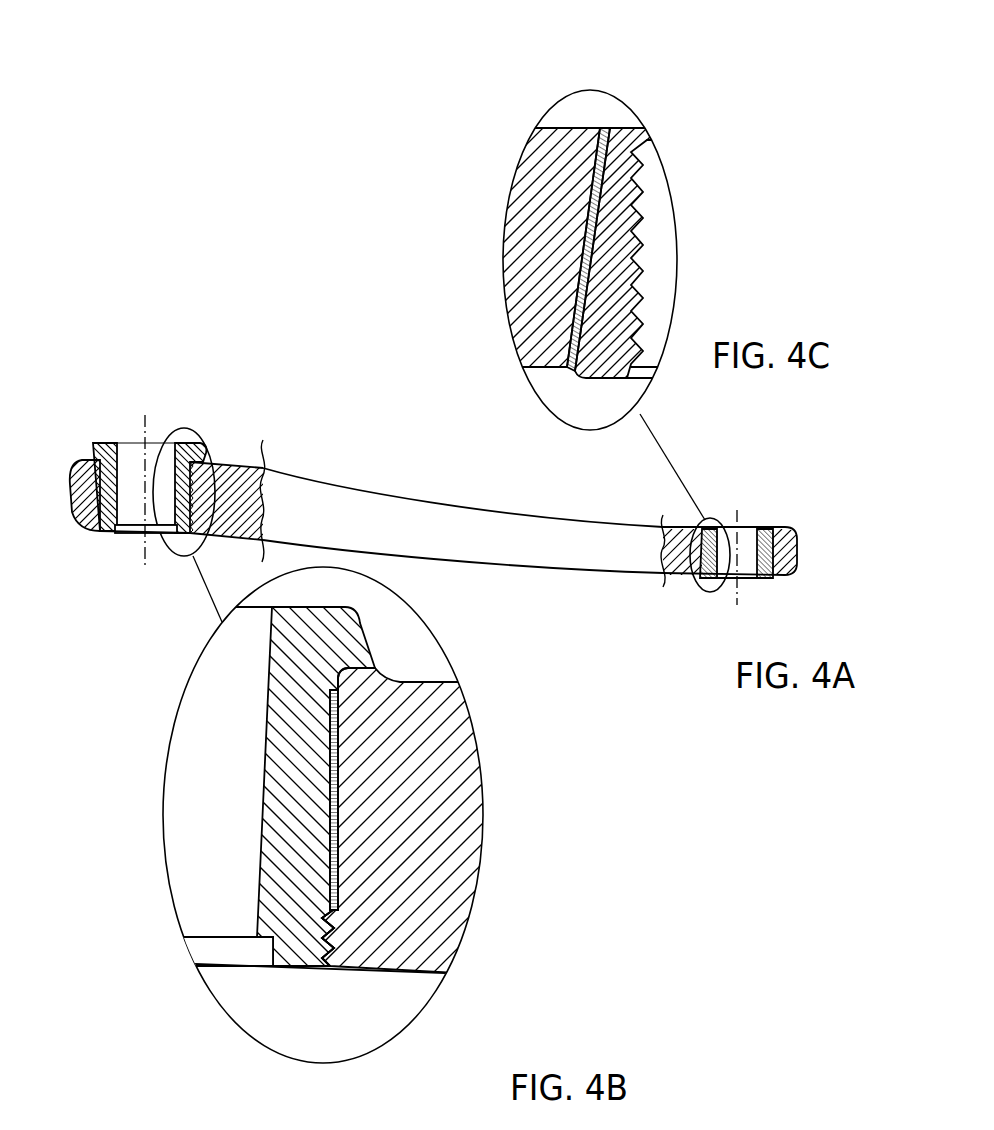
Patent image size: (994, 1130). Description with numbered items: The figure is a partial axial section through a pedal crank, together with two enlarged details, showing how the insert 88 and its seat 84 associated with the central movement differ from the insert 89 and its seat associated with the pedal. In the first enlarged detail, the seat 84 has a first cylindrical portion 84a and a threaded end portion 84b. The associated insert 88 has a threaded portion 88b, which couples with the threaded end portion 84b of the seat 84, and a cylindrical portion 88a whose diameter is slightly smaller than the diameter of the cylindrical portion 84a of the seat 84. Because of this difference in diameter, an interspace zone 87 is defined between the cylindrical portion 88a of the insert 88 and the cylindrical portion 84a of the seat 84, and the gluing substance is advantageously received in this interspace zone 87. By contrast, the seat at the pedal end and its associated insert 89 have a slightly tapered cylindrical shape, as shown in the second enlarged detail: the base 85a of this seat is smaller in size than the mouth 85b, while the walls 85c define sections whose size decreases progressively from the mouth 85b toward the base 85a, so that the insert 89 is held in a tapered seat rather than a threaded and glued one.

In FIG. 4A, the seat 84 is at (224, 464).
In FIG. 4B, the first cylindrical portion 84a is at (338, 747).
In FIG. 4B, the threaded end portion 84b is at (330, 960).
In FIG. 4A, the base 85a is at (768, 531).
In FIG. 4A, the mouth 85b is at (796, 603).
In FIG. 4A, the walls 85c is at (790, 548).
In FIG. 4B, the interspace zone 87 is at (338, 816).
In FIG. 4A, the insert 88 is at (101, 434).
In FIG. 4B, the cylindrical portion 88a is at (337, 722).
In FIG. 4B, the threaded portion 88b is at (323, 928).
In FIG. 4A, the insert 89 is at (767, 564).